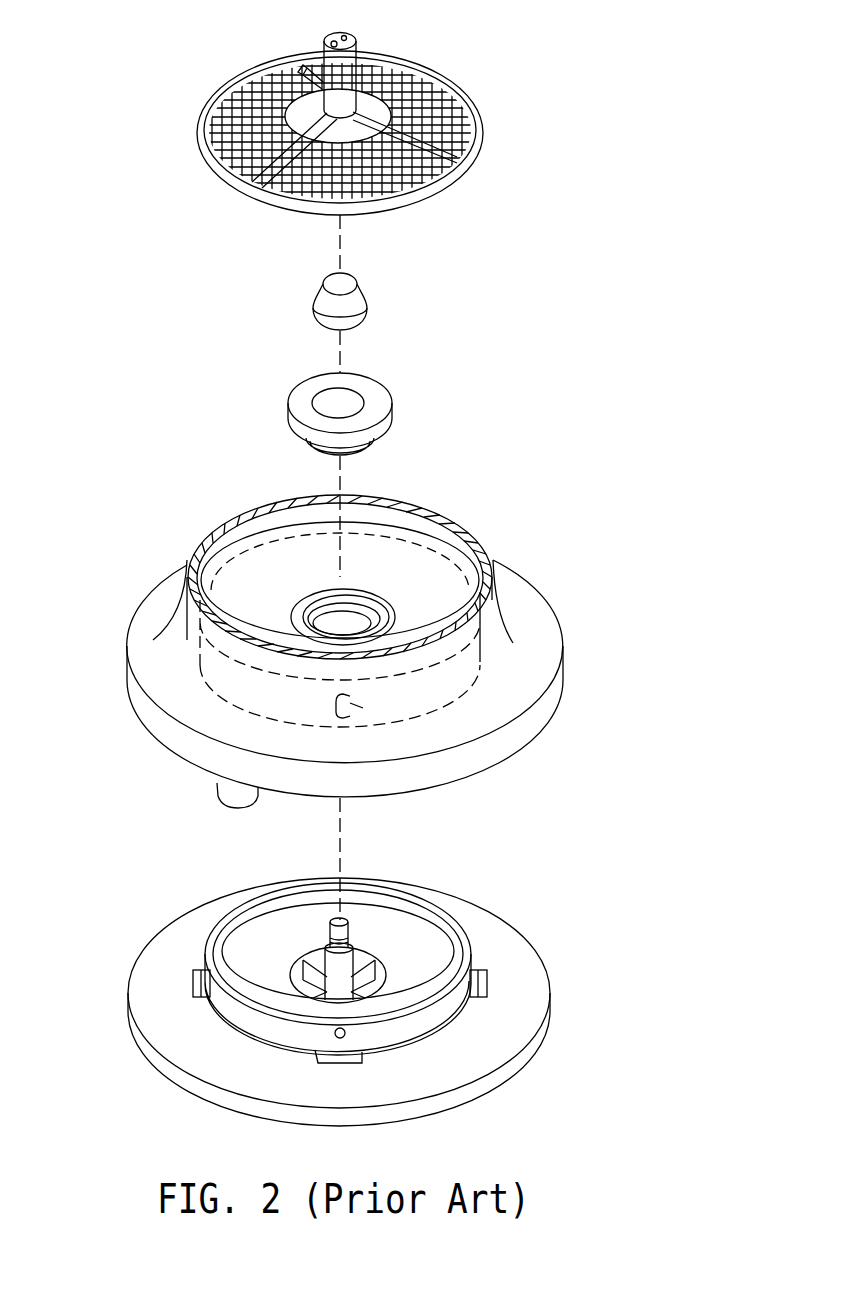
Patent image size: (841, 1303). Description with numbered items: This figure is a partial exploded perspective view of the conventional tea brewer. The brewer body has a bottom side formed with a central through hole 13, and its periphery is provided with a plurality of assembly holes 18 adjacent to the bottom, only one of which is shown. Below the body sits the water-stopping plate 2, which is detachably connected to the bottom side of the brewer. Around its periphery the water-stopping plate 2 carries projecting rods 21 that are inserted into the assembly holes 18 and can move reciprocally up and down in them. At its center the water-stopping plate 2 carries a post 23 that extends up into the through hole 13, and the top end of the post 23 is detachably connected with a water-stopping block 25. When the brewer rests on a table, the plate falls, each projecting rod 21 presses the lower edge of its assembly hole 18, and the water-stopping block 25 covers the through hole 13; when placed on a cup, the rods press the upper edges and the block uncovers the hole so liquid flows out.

The water-stopping plate 2 is at (565, 987).
The through hole 13 is at (358, 625).
The assembly hole 18 is at (377, 713).
The projecting rod 21 is at (335, 1033).
The post 23 is at (337, 978).
The water-stopping block 25 is at (390, 288).